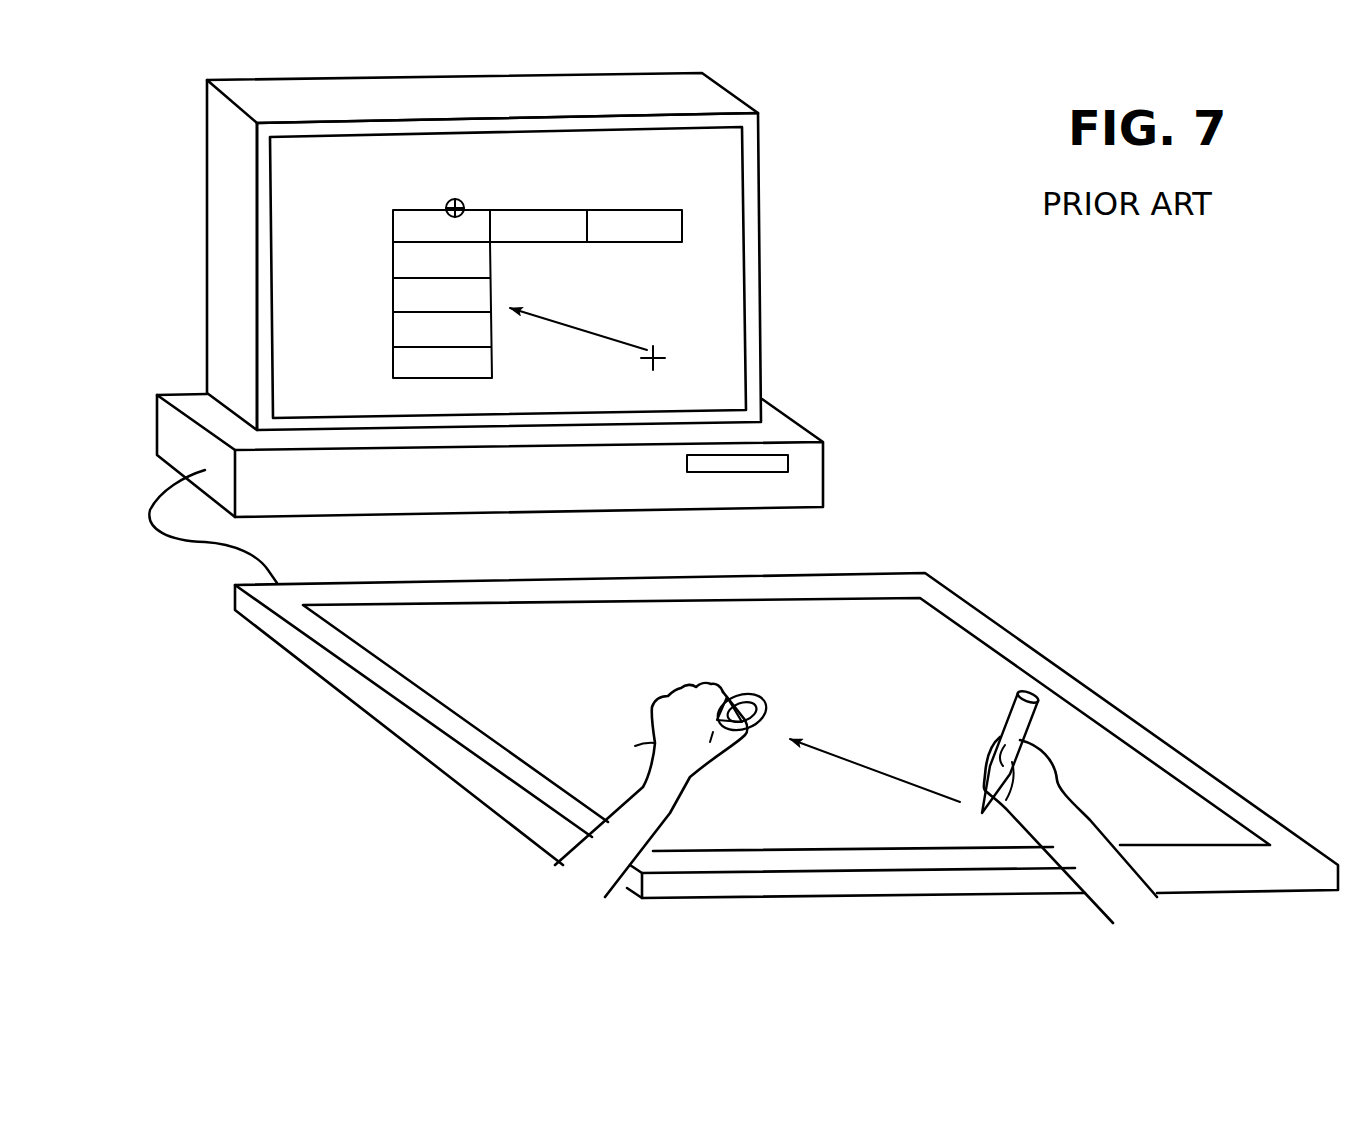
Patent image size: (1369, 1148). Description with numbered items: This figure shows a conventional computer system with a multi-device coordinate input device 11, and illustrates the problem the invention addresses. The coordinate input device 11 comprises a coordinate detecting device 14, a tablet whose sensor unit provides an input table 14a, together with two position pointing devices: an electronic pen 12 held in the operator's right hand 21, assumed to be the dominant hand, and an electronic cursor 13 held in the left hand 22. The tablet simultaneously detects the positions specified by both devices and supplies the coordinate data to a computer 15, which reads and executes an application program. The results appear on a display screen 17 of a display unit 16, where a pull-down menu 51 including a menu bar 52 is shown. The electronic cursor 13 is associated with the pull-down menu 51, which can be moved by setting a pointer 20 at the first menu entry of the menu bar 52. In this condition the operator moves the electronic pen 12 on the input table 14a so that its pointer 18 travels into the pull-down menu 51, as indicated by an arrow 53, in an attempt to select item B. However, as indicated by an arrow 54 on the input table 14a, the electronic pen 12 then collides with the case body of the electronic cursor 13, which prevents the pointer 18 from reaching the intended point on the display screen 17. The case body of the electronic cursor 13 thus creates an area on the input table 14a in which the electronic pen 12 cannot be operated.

The coordinate input device 11 is at (320, 676).
The electronic pen 12 is at (1020, 720).
The electronic cursor 13 is at (766, 712).
The coordinate detecting device 14 is at (463, 738).
The input table 14a is at (950, 648).
The computer 15 is at (790, 420).
The display unit 16 is at (764, 130).
The display screen 17 is at (727, 205).
The pointer 18 is at (663, 357).
The pointer 20 is at (462, 202).
The right hand 21 is at (1047, 790).
The left hand 22 is at (667, 737).
The pull-down menu 51 is at (388, 248).
The menu bar 52 is at (638, 210).
The arrow 53 is at (587, 330).
The arrow 54 is at (862, 758).